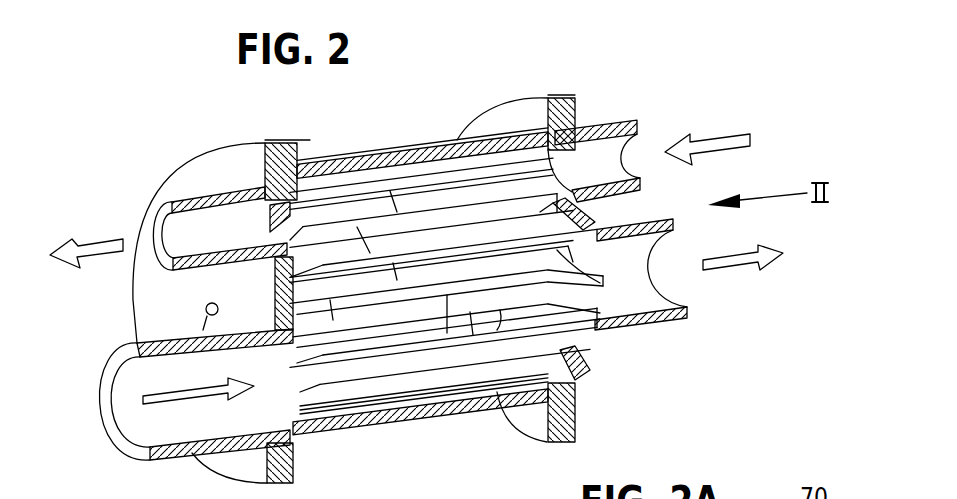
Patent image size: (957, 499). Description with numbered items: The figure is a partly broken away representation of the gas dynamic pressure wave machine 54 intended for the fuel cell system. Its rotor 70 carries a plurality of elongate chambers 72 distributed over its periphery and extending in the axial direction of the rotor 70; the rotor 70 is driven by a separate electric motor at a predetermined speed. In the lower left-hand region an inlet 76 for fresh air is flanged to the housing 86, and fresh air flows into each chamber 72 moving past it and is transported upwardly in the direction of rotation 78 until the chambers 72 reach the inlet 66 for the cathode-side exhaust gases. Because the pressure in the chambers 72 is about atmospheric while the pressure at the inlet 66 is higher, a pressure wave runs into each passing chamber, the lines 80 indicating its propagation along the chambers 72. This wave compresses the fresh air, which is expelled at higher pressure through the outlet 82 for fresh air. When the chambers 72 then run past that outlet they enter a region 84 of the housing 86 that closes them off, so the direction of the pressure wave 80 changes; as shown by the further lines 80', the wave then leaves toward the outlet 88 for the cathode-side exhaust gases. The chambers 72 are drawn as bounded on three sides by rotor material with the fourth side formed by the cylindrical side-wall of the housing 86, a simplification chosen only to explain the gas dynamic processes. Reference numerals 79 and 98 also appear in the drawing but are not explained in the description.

The gas dynamic pressure wave machine 54 is at (506, 70).
The inlet for the cathode-side exhaust gases 66 is at (622, 119).
The rotor 70 is at (320, 222).
The elongate chambers 72 is at (427, 197).
The inlet for fresh air 76 is at (116, 440).
The direction of rotation 78 is at (197, 290).
The flow direction marker 79 is at (200, 316).
The lines indicating the propagation of the pressure wave 80 is at (442, 166).
The further lines indicating the pressure wave 80' is at (485, 364).
The outlet for fresh air 82 is at (160, 212).
The region of the housing 84 is at (281, 292).
The housing 86 is at (333, 430).
The outlet for the cathode-side exhaust gases 88 is at (668, 322).
The cutouts 98 is at (562, 183).